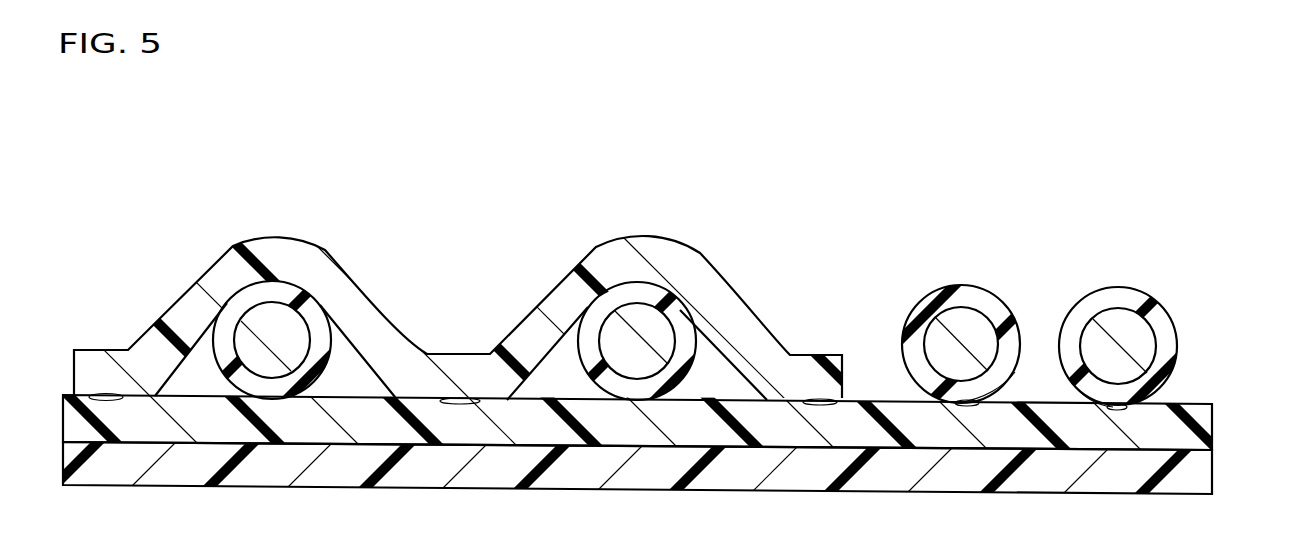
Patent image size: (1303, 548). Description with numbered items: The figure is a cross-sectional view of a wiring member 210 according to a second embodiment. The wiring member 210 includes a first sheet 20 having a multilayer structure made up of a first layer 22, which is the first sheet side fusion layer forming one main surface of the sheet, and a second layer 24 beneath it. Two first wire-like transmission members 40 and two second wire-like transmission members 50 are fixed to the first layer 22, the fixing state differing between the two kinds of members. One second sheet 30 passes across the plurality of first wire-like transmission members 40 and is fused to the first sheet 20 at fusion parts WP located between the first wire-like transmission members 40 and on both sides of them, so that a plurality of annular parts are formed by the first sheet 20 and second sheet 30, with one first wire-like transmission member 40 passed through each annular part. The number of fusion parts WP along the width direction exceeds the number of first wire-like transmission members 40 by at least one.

The wiring member 210 is at (1077, 138).
The first sheet 20 is at (1249, 411).
The first layer 22 is at (1211, 435).
The second layer 24 is at (1197, 478).
The second sheet 30 is at (278, 243).
The first wire-like transmission member 40 is at (333, 318).
The second wire-like transmission member 50 is at (975, 285).
The fusion part WP is at (112, 394).